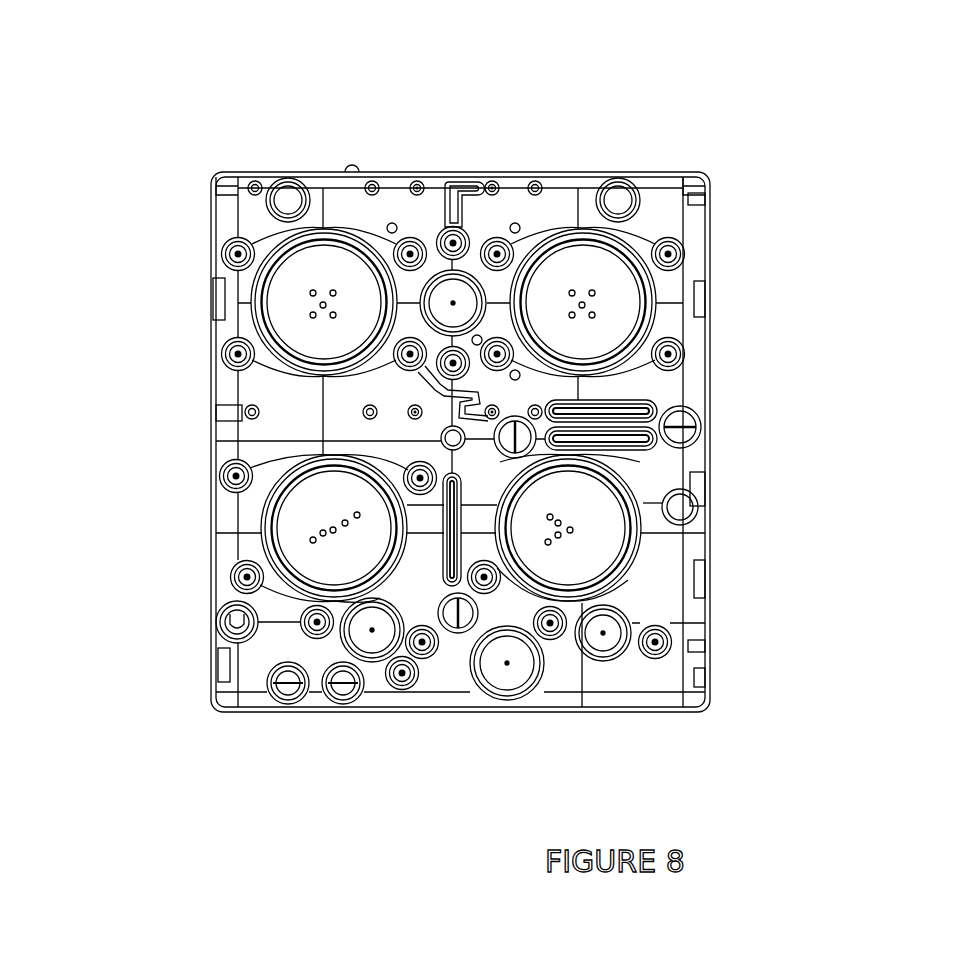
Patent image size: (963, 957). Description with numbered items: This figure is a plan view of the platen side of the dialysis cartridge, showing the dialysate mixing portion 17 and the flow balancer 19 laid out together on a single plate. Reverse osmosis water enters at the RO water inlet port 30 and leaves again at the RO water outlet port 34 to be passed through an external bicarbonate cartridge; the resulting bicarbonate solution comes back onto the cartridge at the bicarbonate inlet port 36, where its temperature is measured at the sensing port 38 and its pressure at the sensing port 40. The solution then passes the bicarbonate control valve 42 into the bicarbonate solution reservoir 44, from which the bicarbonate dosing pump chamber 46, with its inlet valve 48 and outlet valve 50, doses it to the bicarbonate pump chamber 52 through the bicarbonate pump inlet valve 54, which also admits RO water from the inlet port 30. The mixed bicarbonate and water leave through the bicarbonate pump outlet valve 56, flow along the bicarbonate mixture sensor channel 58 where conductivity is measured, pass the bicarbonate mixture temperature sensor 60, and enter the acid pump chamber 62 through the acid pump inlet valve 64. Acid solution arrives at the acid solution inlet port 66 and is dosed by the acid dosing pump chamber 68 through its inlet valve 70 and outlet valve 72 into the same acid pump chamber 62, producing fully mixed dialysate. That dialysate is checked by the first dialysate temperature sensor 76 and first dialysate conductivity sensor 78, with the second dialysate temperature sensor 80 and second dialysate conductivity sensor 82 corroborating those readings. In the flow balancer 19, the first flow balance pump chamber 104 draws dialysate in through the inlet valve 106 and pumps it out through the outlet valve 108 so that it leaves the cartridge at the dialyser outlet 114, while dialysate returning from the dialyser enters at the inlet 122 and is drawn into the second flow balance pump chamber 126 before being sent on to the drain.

The dialyser outlet 114 is at (218, 172).
The outlet valve 108 is at (234, 246).
The inlet valve 106 is at (404, 355).
The inlet 122 is at (693, 176).
The second dialysate conductivity sensor 82 is at (595, 412).
The flow balancer 19 is at (740, 428).
The second dialysate temperature sensor 80 is at (684, 424).
The first dialysate conductivity sensor 78 is at (618, 440).
The dialysate mixing portion 17 is at (712, 445).
The acid solution inlet port 66 is at (690, 647).
The acid dosing pump chamber inlet valve 70 is at (660, 645).
The acid dosing pump chamber 68 is at (604, 640).
The outlet valve 72 is at (552, 626).
The bicarbonate solution reservoir 44 is at (510, 665).
The inlet valve 48 is at (425, 648).
The bicarbonate control valve 42 is at (405, 676).
The sensing port 40 is at (345, 688).
The sensing port 38 is at (295, 690).
The bicarbonate inlet port 36 is at (211, 708).
The outlet valve 50 is at (310, 628).
The RO water inlet port 30 is at (230, 610).
The bicarbonate pump inlet valve 54 is at (243, 574).
The bicarbonate mixture sensor channel 58 is at (450, 547).
The RO water outlet port 34 is at (222, 448).
The first dialysate temperature sensor 76 is at (502, 425).
The bicarbonate pump outlet valve 56 is at (418, 472).
The bicarbonate dosing pump chamber 46 is at (385, 620).
The bicarbonate mixture temperature sensor 60 is at (472, 612).
The acid pump inlet valve 64 is at (495, 575).
The first flow balance pump chamber 104 is at (340, 286).
The second flow balance pump chamber 126 is at (602, 288).
The bicarbonate pump chamber 52 is at (342, 514).
The acid pump chamber 62 is at (580, 511).